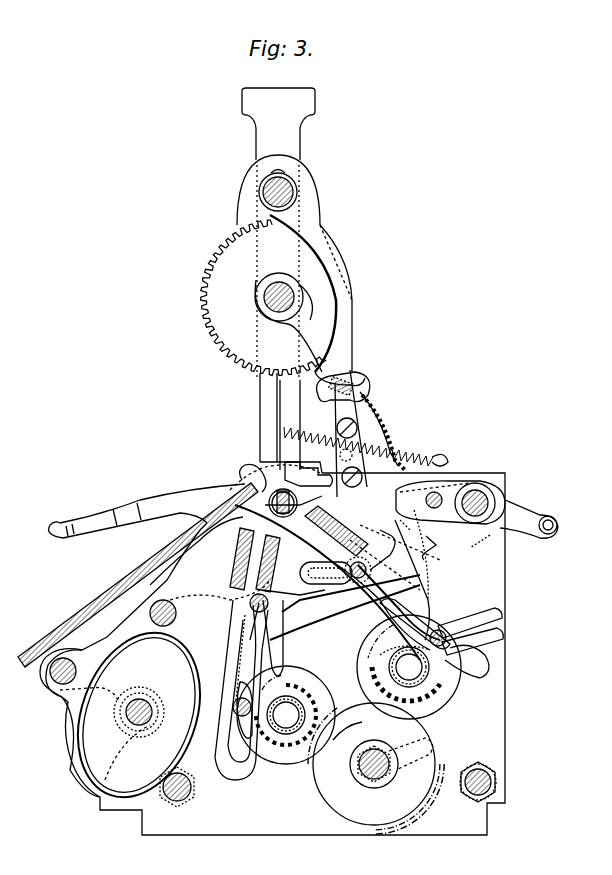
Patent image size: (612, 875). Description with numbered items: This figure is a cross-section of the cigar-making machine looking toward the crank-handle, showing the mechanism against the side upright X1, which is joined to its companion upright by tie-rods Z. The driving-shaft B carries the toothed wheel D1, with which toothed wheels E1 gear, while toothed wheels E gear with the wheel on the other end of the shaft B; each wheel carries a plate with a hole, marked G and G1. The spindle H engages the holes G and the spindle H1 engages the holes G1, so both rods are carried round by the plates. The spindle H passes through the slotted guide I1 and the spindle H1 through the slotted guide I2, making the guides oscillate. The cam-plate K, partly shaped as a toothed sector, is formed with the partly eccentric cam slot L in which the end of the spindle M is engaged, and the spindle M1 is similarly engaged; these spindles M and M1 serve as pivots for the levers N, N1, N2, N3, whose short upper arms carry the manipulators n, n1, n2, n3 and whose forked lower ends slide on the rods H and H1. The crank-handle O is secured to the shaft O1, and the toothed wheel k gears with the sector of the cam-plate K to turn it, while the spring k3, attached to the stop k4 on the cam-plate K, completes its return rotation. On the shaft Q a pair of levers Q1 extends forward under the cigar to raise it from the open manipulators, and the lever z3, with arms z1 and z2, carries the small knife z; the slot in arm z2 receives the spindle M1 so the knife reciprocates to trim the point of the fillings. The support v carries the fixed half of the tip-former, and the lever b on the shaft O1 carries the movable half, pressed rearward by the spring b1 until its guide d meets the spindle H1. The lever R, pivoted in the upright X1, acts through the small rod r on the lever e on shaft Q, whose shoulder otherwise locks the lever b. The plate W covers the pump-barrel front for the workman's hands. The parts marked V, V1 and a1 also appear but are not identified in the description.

The crank-handle O is at (278, 234).
The tie-rod Z is at (328, 489).
The toothed wheel k is at (268, 295).
The shaft O1 is at (279, 297).
The spring b1 is at (325, 258).
The lever b is at (340, 372).
The cam-plate K is at (332, 515).
The stop k4 is at (287, 430).
The spring k3 is at (400, 470).
The lever e is at (466, 525).
The shaft Q is at (475, 503).
The lever Q1 is at (435, 495).
The small rod r is at (548, 525).
The lever R is at (96, 518).
The plate W is at (138, 575).
The support v is at (220, 576).
The elliptical ring V is at (138, 715).
The ring hub V1 is at (139, 712).
The hole G is at (233, 706).
The guide I1 is at (238, 778).
The lever N is at (242, 683).
The lever N1 is at (278, 642).
The spindle H is at (244, 707).
The manipulator n1 is at (260, 584).
The manipulator n2 is at (331, 531).
The manipulator n is at (253, 478).
The small knife z is at (280, 492).
The lever arm z1 is at (309, 474).
The manipulator n3 is at (293, 497).
The lever arm z2 is at (318, 578).
The spindle M is at (341, 595).
The cam slot L is at (345, 612).
The spindle M1 is at (395, 557).
The guide I2 is at (412, 580).
The guide d is at (419, 555).
The lever z3 is at (429, 548).
The lever N2 is at (392, 598).
The lever N3 is at (432, 614).
The hole G1 is at (455, 626).
The spindle H1 is at (470, 631).
The toothed wheel E1 is at (366, 694).
The upright X1 is at (378, 657).
The toothed wheel E is at (286, 715).
The toothed wheel D1 is at (376, 768).
The driving-shaft B is at (391, 763).
The pin a1 is at (406, 525).